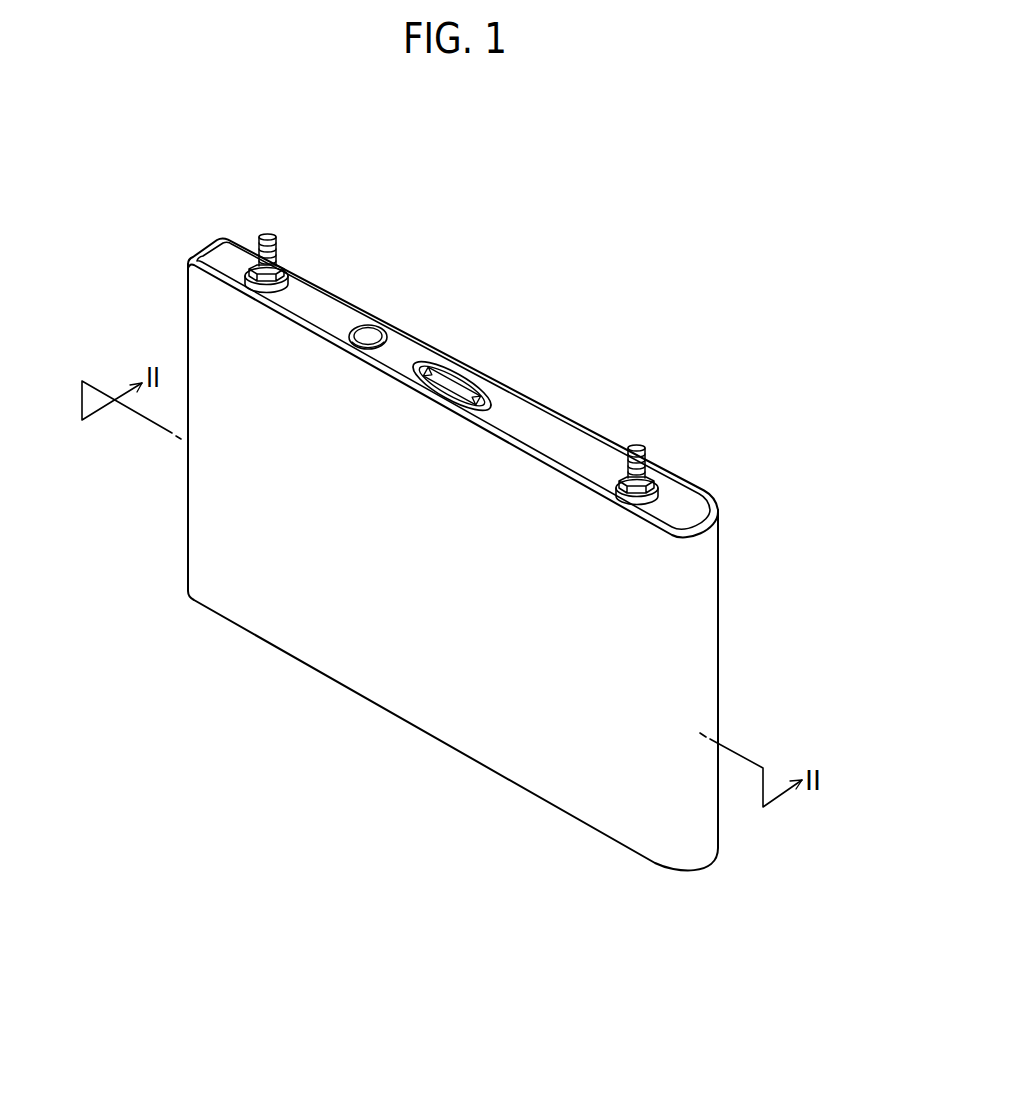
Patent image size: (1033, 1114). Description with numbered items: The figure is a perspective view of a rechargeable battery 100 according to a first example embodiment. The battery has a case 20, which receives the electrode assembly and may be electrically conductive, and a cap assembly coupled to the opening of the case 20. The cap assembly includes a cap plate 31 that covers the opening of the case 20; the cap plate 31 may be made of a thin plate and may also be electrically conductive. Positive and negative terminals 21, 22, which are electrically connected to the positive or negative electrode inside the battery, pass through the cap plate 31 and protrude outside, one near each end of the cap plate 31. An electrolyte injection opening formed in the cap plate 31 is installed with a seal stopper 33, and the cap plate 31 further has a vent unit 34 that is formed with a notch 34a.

The rechargeable battery 100 is at (497, 175).
The case 20 is at (410, 697).
The positive terminal 21 is at (269, 234).
The negative terminal 22 is at (633, 447).
The cap plate 31 is at (417, 338).
The seal stopper 33 is at (369, 334).
The vent unit 34 is at (448, 368).
The notch 34a is at (464, 386).